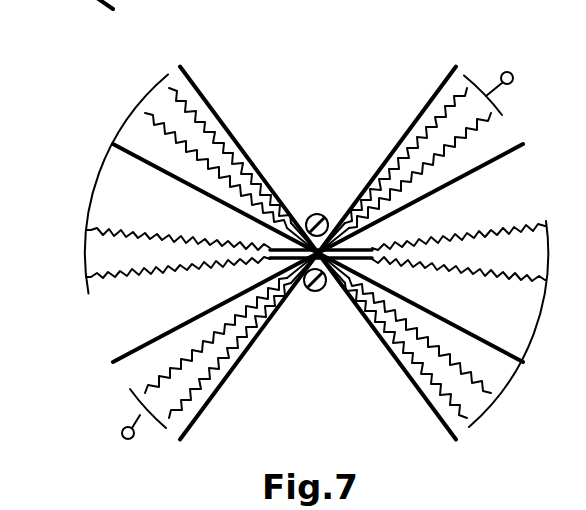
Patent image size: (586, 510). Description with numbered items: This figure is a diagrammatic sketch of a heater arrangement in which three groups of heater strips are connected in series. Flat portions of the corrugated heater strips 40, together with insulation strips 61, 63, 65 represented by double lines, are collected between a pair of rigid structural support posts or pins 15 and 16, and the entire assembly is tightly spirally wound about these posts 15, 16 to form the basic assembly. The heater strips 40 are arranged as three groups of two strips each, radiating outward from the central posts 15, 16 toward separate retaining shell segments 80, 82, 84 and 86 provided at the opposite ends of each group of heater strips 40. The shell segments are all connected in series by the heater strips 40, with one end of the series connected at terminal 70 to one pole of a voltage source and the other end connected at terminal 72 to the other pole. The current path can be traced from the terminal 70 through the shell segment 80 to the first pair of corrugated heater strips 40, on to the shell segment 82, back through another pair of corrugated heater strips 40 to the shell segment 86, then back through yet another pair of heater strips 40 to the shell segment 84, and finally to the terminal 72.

The rigid structural support post 15 is at (310, 217).
The rigid structural support post 16 is at (313, 292).
The heater strip 40 is at (170, 135).
The insulation strip 61 is at (433, 90).
The insulation strip 63 is at (477, 173).
The insulation strip 65 is at (477, 338).
The terminal 70 is at (508, 72).
The terminal 72 is at (129, 440).
The shell segment 80 is at (482, 90).
The shell segment 82 is at (95, 175).
The shell segment 84 is at (140, 407).
The shell segment 86 is at (520, 373).